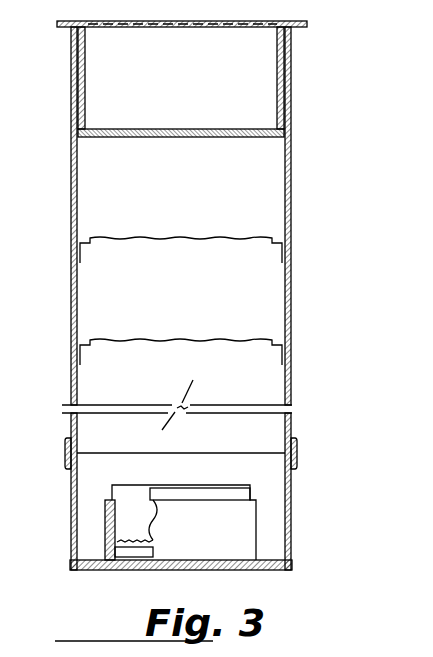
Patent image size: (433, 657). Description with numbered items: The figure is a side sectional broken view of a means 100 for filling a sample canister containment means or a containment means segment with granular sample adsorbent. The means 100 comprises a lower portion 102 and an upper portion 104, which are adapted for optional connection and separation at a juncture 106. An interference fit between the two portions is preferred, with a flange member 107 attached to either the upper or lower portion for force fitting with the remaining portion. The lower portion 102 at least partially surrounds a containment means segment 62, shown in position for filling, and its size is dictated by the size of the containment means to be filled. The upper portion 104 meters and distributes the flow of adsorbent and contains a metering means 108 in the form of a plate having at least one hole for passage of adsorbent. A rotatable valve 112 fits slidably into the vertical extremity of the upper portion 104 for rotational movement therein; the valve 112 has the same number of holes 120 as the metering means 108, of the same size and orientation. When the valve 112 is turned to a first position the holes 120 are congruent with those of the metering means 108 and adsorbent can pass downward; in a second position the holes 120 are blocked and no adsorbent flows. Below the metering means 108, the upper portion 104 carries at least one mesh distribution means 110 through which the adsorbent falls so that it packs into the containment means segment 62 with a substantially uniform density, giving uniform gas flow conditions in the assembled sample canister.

The means for filling the containment means 100 is at (306, 276).
The lower portion 102 is at (290, 508).
The upper portion 104 is at (291, 178).
The juncture 106 is at (310, 419).
The flange member 107 is at (68, 452).
The metering means 108 is at (283, 128).
The mesh distribution means 110 is at (213, 237).
The rotatable valve 112 is at (302, 22).
The holes 120 is at (127, 130).
The containment means segment 62 is at (240, 540).